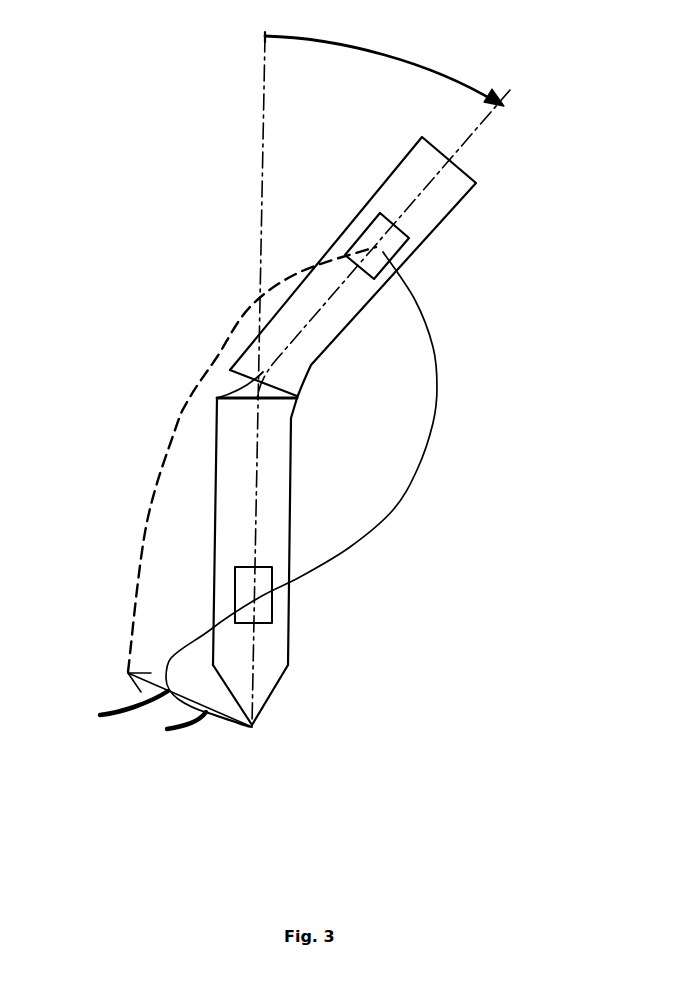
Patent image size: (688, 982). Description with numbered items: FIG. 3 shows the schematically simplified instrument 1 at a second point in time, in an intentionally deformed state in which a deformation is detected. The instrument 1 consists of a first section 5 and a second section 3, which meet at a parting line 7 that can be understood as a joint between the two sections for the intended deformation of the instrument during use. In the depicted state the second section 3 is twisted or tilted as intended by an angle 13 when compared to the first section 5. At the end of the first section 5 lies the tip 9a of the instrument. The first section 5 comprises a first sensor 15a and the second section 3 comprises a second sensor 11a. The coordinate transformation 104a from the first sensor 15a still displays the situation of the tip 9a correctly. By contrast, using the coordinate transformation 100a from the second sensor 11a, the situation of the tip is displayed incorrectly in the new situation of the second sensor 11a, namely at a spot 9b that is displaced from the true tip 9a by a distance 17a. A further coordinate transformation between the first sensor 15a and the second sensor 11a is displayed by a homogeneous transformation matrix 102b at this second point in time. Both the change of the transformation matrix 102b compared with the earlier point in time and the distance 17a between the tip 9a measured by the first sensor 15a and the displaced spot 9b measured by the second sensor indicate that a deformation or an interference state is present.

The instrument 1 is at (177, 292).
The second section 3 is at (387, 178).
The first section 5 is at (214, 450).
The parting line 7 is at (217, 398).
The tip of the instrument 9a is at (252, 727).
The displaced situation of the tip 9b is at (127, 662).
The second sensor 11a is at (367, 227).
The angle 13 is at (384, 67).
The first sensor 15a is at (235, 580).
The distance 17a is at (185, 729).
The coordinate transformation 100a is at (225, 337).
The homogeneous transformation matrix 102b is at (417, 470).
The transformation matrix 104a is at (107, 710).